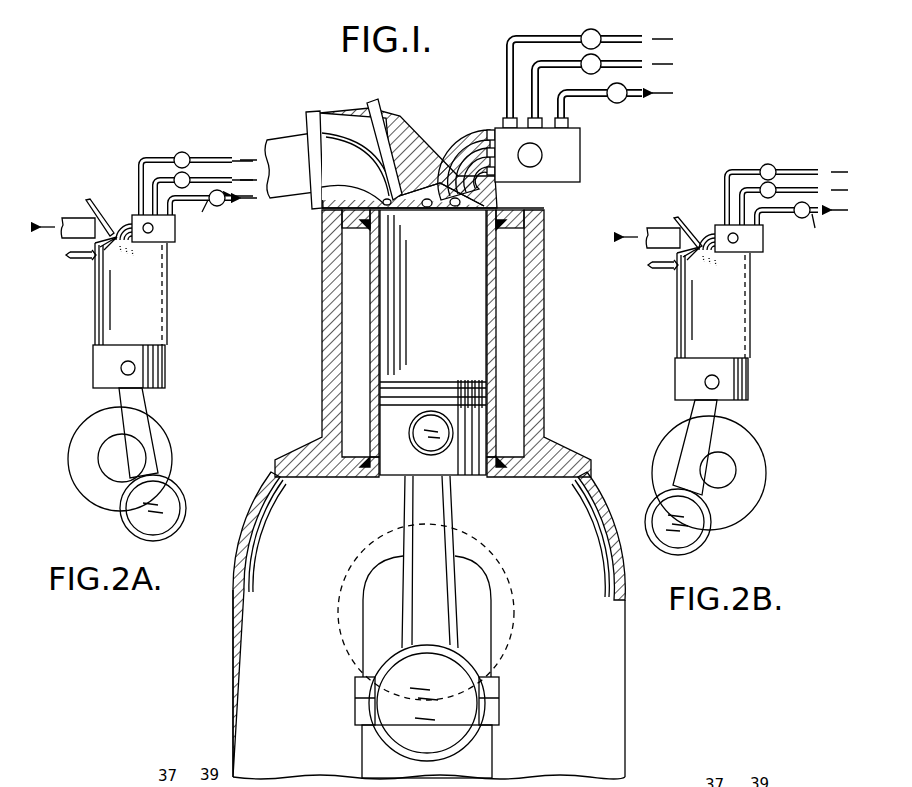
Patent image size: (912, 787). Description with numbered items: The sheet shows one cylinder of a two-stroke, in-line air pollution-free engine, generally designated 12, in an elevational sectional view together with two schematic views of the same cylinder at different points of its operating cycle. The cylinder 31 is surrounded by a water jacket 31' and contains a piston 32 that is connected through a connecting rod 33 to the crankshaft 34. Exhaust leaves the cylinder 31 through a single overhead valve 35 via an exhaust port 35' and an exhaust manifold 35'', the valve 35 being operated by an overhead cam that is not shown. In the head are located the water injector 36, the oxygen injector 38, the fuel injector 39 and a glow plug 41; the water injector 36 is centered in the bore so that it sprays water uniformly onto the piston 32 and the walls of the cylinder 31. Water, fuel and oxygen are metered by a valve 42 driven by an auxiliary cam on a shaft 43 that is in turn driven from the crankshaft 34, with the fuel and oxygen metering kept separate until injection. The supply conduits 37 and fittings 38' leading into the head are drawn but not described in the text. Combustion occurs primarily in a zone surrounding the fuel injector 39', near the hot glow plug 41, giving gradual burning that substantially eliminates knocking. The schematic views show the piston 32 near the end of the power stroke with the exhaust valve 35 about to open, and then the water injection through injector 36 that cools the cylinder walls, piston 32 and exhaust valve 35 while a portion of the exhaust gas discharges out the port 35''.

In FIG. 1, the engine 12 is at (265, 497).
In FIG. 1, the cylinder 31 is at (433, 343).
In FIG. 2A, the cylinder 31 is at (151, 291).
In FIG. 2B, the cylinder 31 is at (741, 302).
In FIG. 1, the water jacket 31' is at (466, 338).
In FIG. 1, the piston 32 is at (452, 413).
In FIG. 2A, the piston 32 is at (167, 368).
In FIG. 2B, the piston 32 is at (750, 378).
In FIG. 1, the connecting rod 33 is at (436, 508).
In FIG. 2A, the connecting rod 33 is at (140, 420).
In FIG. 2B, the connecting rod 33 is at (692, 437).
In FIG. 1, the crankshaft 34 is at (513, 610).
In FIG. 2A, the crankshaft 34 is at (105, 473).
In FIG. 2B, the crankshaft 34 is at (728, 467).
In FIG. 1, the exhaust valve 35 is at (395, 176).
In FIG. 2A, the exhaust valve 35 is at (105, 202).
In FIG. 2B, the exhaust valve 35 is at (689, 216).
In FIG. 1, the exhaust port 35' is at (302, 173).
In FIG. 1, the exhaust manifold 35'' is at (274, 144).
In FIG. 2A, the exhaust manifold 35'' is at (67, 210).
In FIG. 2B, the exhaust manifold 35'' is at (651, 222).
In FIG. 1, the water injector 36 is at (445, 207).
In FIG. 2A, the water injector 36 is at (118, 240).
In FIG. 2B, the water injector 36 is at (702, 246).
In FIG. 1, the supply conduits 37 is at (508, 63).
In FIG. 2A, the supply conduits 37 is at (155, 157).
In FIG. 2B, the supply conduits 37 is at (735, 170).
In FIG. 1, the oxygen injector 38 is at (563, 136).
In FIG. 2A, the oxygen injector 38 is at (214, 214).
In FIG. 2B, the oxygen injector 38 is at (821, 231).
In FIG. 1, the cylinder head 38' is at (462, 159).
In FIG. 1, the fuel injector 39 is at (531, 70).
In FIG. 2A, the fuel injector 39 is at (199, 165).
In FIG. 2B, the fuel injector 39 is at (785, 177).
In FIG. 1, the fuel injector 39' is at (468, 230).
In FIG. 1, the glow plug 41 is at (428, 214).
In FIG. 2A, the glow plug 41 is at (92, 259).
In FIG. 2B, the glow plug 41 is at (674, 269).
In FIG. 1, the metering valve 42 is at (578, 140).
In FIG. 2A, the metering valve 42 is at (170, 233).
In FIG. 2B, the metering valve 42 is at (763, 240).
In FIG. 1, the shaft 43 is at (540, 160).
In FIG. 2A, the shaft 43 is at (152, 230).
In FIG. 2B, the shaft 43 is at (737, 240).